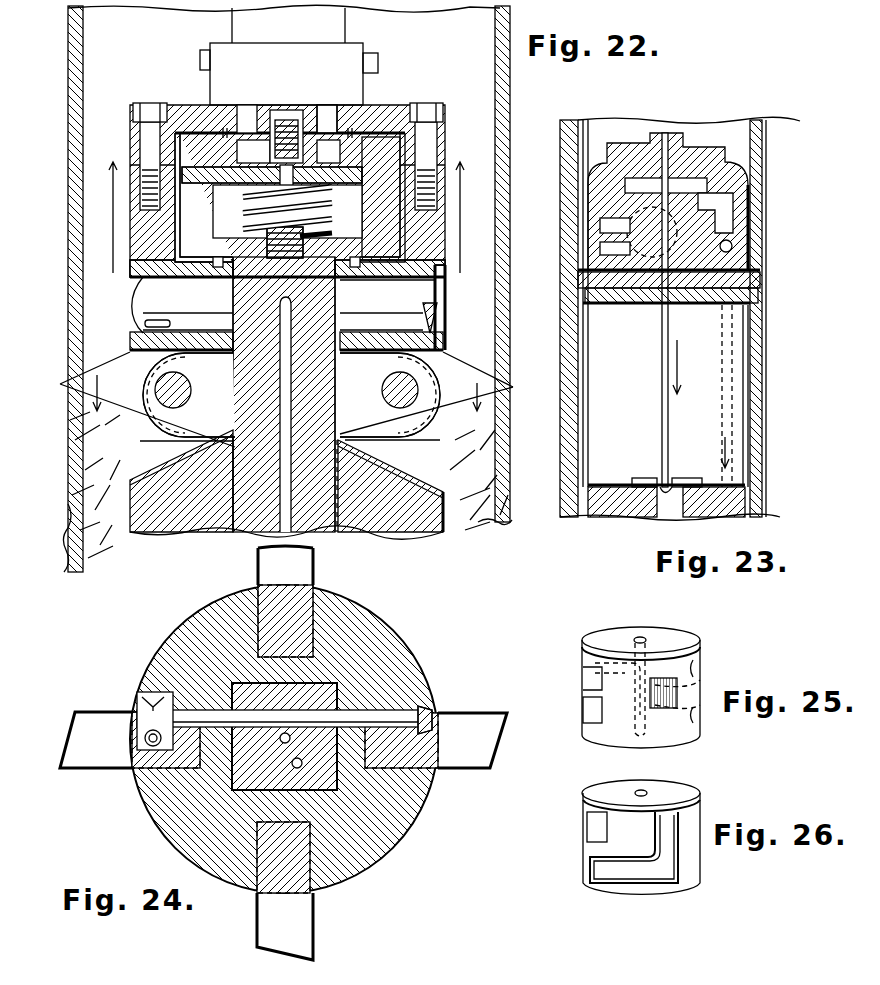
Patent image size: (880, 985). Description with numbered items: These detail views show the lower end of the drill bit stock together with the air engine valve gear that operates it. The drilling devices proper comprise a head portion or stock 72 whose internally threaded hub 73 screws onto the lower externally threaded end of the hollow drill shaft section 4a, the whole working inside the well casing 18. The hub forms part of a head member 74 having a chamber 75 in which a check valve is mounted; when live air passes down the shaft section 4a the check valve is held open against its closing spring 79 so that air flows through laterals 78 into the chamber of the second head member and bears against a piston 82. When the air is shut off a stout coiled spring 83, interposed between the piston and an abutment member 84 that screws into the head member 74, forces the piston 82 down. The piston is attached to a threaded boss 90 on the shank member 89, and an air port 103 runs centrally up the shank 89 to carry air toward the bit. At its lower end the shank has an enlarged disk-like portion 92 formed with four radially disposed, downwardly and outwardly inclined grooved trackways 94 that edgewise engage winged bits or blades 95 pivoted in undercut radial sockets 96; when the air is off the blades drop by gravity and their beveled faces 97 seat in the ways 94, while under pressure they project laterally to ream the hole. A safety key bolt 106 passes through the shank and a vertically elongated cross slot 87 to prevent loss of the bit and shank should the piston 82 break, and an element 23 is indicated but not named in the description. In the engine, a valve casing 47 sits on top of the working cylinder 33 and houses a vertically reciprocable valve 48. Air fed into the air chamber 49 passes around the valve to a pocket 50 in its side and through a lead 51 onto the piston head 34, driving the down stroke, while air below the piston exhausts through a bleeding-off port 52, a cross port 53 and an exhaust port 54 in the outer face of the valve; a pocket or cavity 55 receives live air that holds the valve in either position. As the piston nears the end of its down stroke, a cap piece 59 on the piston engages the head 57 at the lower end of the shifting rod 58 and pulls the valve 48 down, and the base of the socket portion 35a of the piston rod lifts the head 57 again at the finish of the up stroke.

In FIG. 22, the drill shaft section 4a is at (232, 20).
In FIG. 22, the well casing 18 is at (83, 76).
In FIG. 22, the bracket 23 is at (233, 302).
In FIG. 22, the head portion or stock 72 is at (132, 140).
In FIG. 22, the internally threaded hub 73 is at (210, 85).
In FIG. 22, the head member 74 is at (198, 129).
In FIG. 22, the chamber 75 is at (327, 106).
In FIG. 22, the laterals 78 is at (345, 172).
In FIG. 22, the closing spring 79 is at (262, 110).
In FIG. 22, the piston 82 is at (345, 222).
In FIG. 22, the coiled spring 83 is at (246, 197).
In FIG. 22, the abutment member 84 is at (349, 137).
In FIG. 22, the cross slot 87 is at (181, 314).
In FIG. 24, the cross slot 87 is at (402, 712).
In FIG. 22, the shank member 89 is at (241, 395).
In FIG. 24, the shank member 89 is at (284, 736).
In FIG. 22, the threaded boss 90 is at (245, 228).
In FIG. 22, the disk-like portion 92 is at (444, 520).
In FIG. 22, the grooved trackways 94 is at (150, 478).
In FIG. 22, the winged bits or blades 95 is at (286, 399).
In FIG. 24, the winged bits or blades 95 is at (258, 568).
In FIG. 22, the sockets 96 is at (291, 395).
In FIG. 22, the inclined faces 97 is at (125, 421).
In FIG. 22, the air port 103 is at (280, 413).
In FIG. 24, the air port 103 is at (280, 742).
In FIG. 22, the safety key bolt 106 is at (372, 331).
In FIG. 24, the safety key bolt 106 is at (462, 708).
In FIG. 23, the working cylinder 33 is at (587, 382).
In FIG. 23, the head 34 is at (617, 487).
In FIG. 23, the guide head 35a is at (668, 500).
In FIG. 23, the valve casing 47 is at (600, 200).
In FIG. 23, the valve 48 is at (641, 292).
In FIG. 25, the valve 48 is at (600, 633).
In FIG. 26, the valve 48 is at (668, 780).
In FIG. 23, the air chamber 49 is at (730, 195).
In FIG. 23, the pocket 50 is at (605, 255).
In FIG. 25, the pocket 50 is at (583, 710).
In FIG. 23, the lead 51 is at (630, 227).
In FIG. 23, the bleeding-off port 52 is at (722, 437).
In FIG. 23, the cross port 53 is at (718, 247).
In FIG. 23, the exhaust port 54 is at (691, 295).
In FIG. 25, the exhaust port 54 is at (590, 667).
In FIG. 26, the exhaust port 54 is at (634, 848).
In FIG. 25, the pocket or cavity 55 is at (665, 710).
In FIG. 23, the head 57 is at (655, 486).
In FIG. 23, the shifting rod 58 is at (662, 442).
In FIG. 23, the cap piece 59 is at (683, 486).